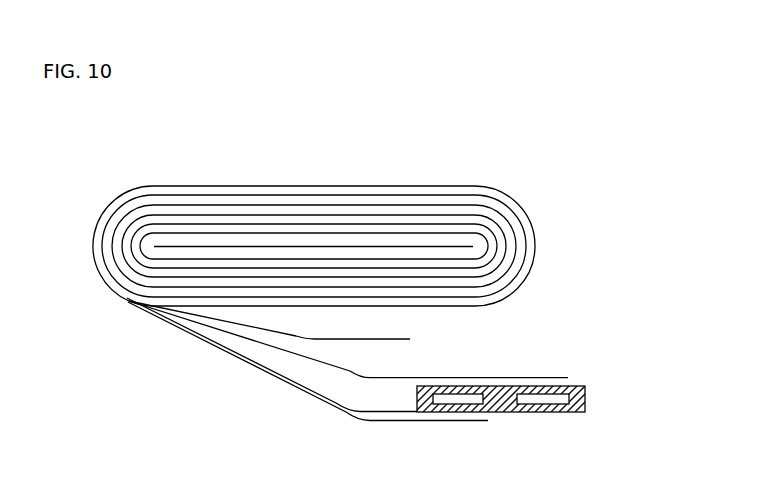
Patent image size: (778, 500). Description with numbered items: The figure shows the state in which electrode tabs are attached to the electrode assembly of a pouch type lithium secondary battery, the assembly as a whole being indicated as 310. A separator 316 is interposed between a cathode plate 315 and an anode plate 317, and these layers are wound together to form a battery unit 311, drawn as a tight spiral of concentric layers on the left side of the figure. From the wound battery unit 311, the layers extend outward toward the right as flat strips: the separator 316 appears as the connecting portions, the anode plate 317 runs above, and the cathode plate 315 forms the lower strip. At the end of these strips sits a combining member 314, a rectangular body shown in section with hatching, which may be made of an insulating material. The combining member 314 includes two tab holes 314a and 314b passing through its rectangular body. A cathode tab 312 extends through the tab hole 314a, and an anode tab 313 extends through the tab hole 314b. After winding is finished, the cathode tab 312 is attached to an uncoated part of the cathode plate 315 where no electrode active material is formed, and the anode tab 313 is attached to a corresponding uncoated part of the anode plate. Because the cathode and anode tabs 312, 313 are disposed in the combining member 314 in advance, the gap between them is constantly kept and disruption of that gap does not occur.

The display device 310 is at (95, 128).
The battery unit 311 is at (350, 179).
The cathode tab 312 is at (449, 403).
The anode tab 313 is at (547, 403).
The combining member 314 is at (511, 403).
The tab hole 314a is at (492, 395).
The tab hole 314b is at (575, 397).
The cathode plate 315 is at (393, 421).
The separator 316 is at (410, 339).
The anode plate 317 is at (558, 376).